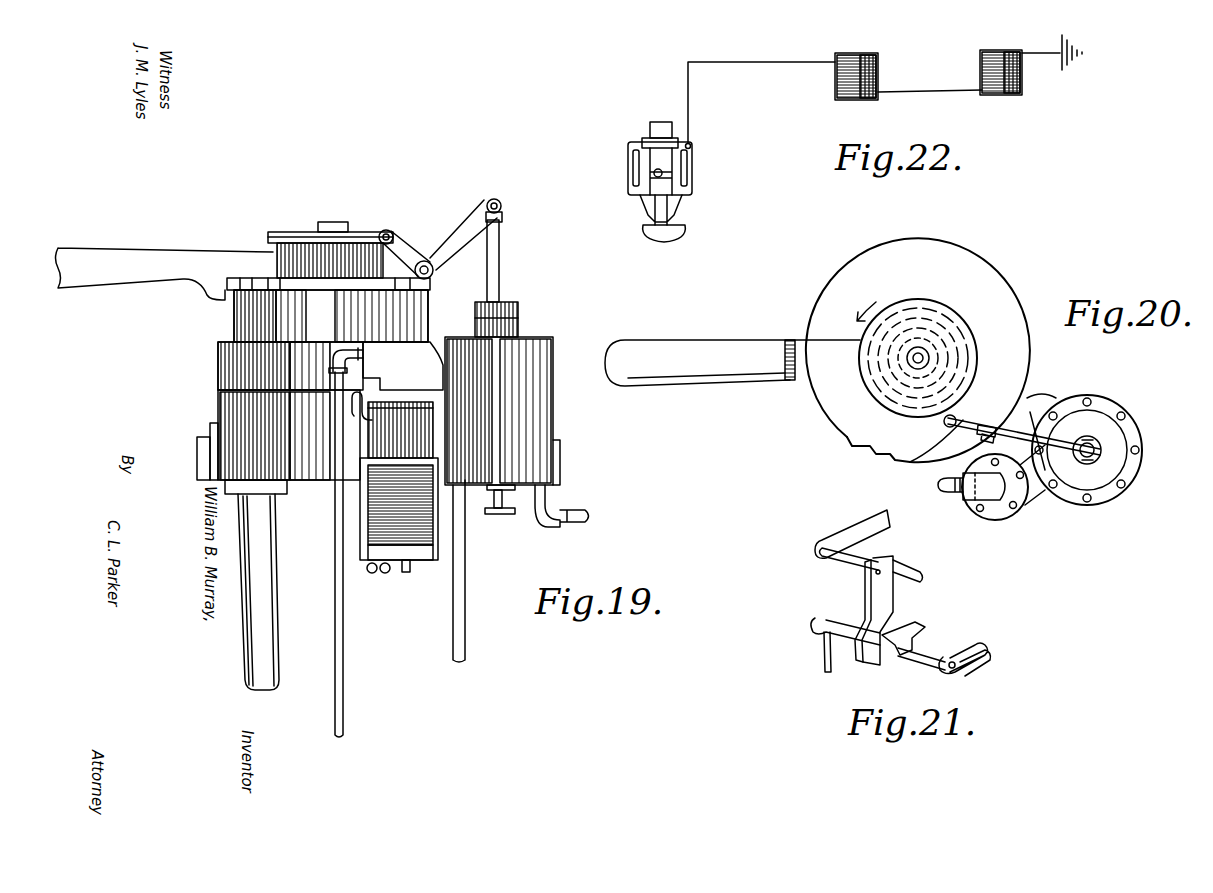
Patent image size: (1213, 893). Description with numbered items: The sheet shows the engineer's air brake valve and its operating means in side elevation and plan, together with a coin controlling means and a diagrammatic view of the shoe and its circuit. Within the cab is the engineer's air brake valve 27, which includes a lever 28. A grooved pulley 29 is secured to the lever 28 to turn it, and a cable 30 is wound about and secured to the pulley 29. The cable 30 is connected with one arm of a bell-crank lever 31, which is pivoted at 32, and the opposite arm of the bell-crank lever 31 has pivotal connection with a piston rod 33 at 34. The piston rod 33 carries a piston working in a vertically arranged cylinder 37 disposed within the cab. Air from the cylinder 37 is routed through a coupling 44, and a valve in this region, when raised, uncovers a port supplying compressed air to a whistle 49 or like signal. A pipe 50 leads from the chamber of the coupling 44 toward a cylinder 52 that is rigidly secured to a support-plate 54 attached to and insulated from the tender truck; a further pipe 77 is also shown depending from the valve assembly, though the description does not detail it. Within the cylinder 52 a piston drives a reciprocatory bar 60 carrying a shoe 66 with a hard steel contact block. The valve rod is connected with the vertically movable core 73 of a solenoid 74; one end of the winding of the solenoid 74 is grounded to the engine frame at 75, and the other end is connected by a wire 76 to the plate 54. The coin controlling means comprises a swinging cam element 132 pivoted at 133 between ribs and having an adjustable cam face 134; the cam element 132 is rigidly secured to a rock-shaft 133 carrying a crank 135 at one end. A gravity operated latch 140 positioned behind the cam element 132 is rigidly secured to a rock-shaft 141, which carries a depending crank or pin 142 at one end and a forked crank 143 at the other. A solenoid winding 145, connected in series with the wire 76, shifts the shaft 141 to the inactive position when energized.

In FIG. 19, the engineer's air brake valve 27 is at (313, 484).
In FIG. 20, the engineer's air brake valve 27 is at (828, 393).
In FIG. 19, the lever 28 is at (122, 278).
In FIG. 20, the lever 28 is at (670, 390).
In FIG. 19, the grooved pulley 29 is at (295, 232).
In FIG. 20, the grooved pulley 29 is at (953, 312).
In FIG. 19, the cable 30 is at (378, 236).
In FIG. 20, the cable 30 is at (937, 426).
In FIG. 19, the bell-crank lever 31 is at (402, 250).
In FIG. 20, the bell-crank lever 31 is at (902, 485).
In FIG. 19, the pivot 32 is at (434, 274).
In FIG. 20, the pivot 32 is at (988, 422).
In FIG. 19, the piston rod 33 is at (503, 248).
In FIG. 19, the pivotal connection 34 is at (503, 206).
In FIG. 20, the pivotal connection 34 is at (1090, 440).
In FIG. 19, the cylinder 37 is at (517, 414).
In FIG. 20, the cylinder 37 is at (1085, 504).
In FIG. 19, the coupling 44 is at (403, 366).
In FIG. 20, the coupling 44 is at (1000, 503).
In FIG. 19, the whistle 49 is at (350, 408).
In FIG. 19, the pipe 50 is at (334, 548).
In FIG. 20, the pipe 50 is at (947, 493).
In FIG. 22, the cylinder 52 is at (664, 160).
In FIG. 22, the support-plate 54 is at (698, 182).
In FIG. 22, the reciprocatory bar 60 is at (668, 212).
In FIG. 22, the shoe 66 is at (687, 231).
In FIG. 19, the core 73 is at (400, 578).
In FIG. 19, the solenoid 74 is at (427, 562).
In FIG. 22, the solenoid 74 is at (1024, 88).
In FIG. 22, the ground 75 is at (1068, 60).
In FIG. 22, the wire 76 is at (946, 91).
In FIG. 19, the pipe 77 is at (467, 562).
In FIG. 21, the swinging cam element 132 is at (895, 594).
In FIG. 21, the rock-shaft 133 is at (897, 567).
In FIG. 21, the cam face 134 is at (868, 610).
In FIG. 21, the crank 135 is at (858, 528).
In FIG. 21, the gravity operated latch 140 is at (925, 626).
In FIG. 21, the rock-shaft 141 is at (918, 658).
In FIG. 21, the depending crank 142 is at (822, 650).
In FIG. 21, the forked crank 143 is at (978, 666).
In FIG. 22, the solenoid winding 145 is at (834, 82).